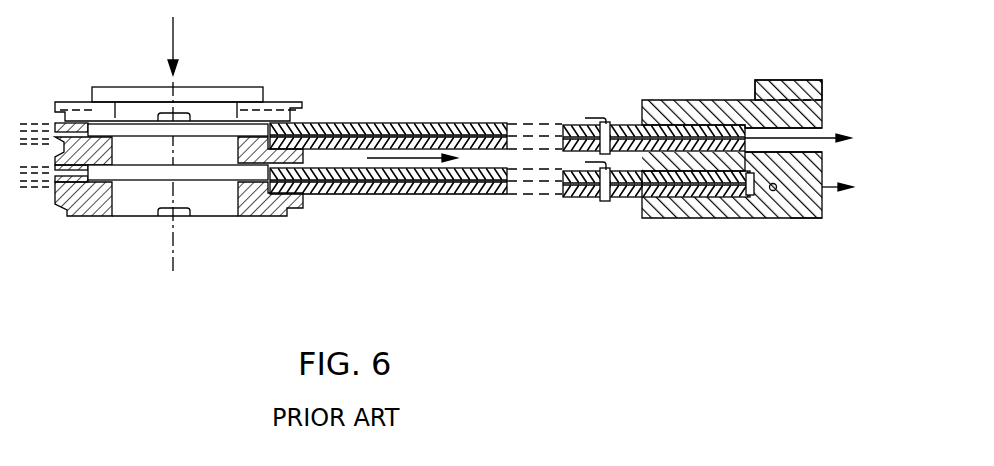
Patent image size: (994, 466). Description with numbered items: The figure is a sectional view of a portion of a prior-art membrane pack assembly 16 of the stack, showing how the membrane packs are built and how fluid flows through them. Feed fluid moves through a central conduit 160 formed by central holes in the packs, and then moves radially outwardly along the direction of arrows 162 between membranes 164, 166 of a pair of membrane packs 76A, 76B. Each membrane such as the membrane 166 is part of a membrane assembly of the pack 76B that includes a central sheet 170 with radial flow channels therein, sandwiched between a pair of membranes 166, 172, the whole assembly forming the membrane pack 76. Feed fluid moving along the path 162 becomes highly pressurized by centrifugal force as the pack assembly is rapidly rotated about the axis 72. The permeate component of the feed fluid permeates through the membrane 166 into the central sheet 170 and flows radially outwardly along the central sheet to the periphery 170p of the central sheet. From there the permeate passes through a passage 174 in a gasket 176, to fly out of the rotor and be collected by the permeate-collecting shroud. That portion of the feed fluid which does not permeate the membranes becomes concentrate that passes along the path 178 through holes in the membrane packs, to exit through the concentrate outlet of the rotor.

The nozzle assembly 16 is at (838, 78).
The axis 72 is at (173, 268).
The nozzle block 76 is at (836, 221).
The membrane pack 76A is at (823, 160).
The membrane pack 76B is at (823, 200).
The central conduit 160 is at (123, 212).
The arrows 162 is at (390, 194).
The membrane 164 is at (433, 122).
The membrane 166 is at (490, 125).
The central sheet 170 is at (432, 195).
The periphery of the central sheet 170p is at (753, 198).
The membrane 172 is at (491, 194).
The passage 174 is at (768, 193).
The gasket 176 is at (803, 220).
The path 178 is at (603, 212).